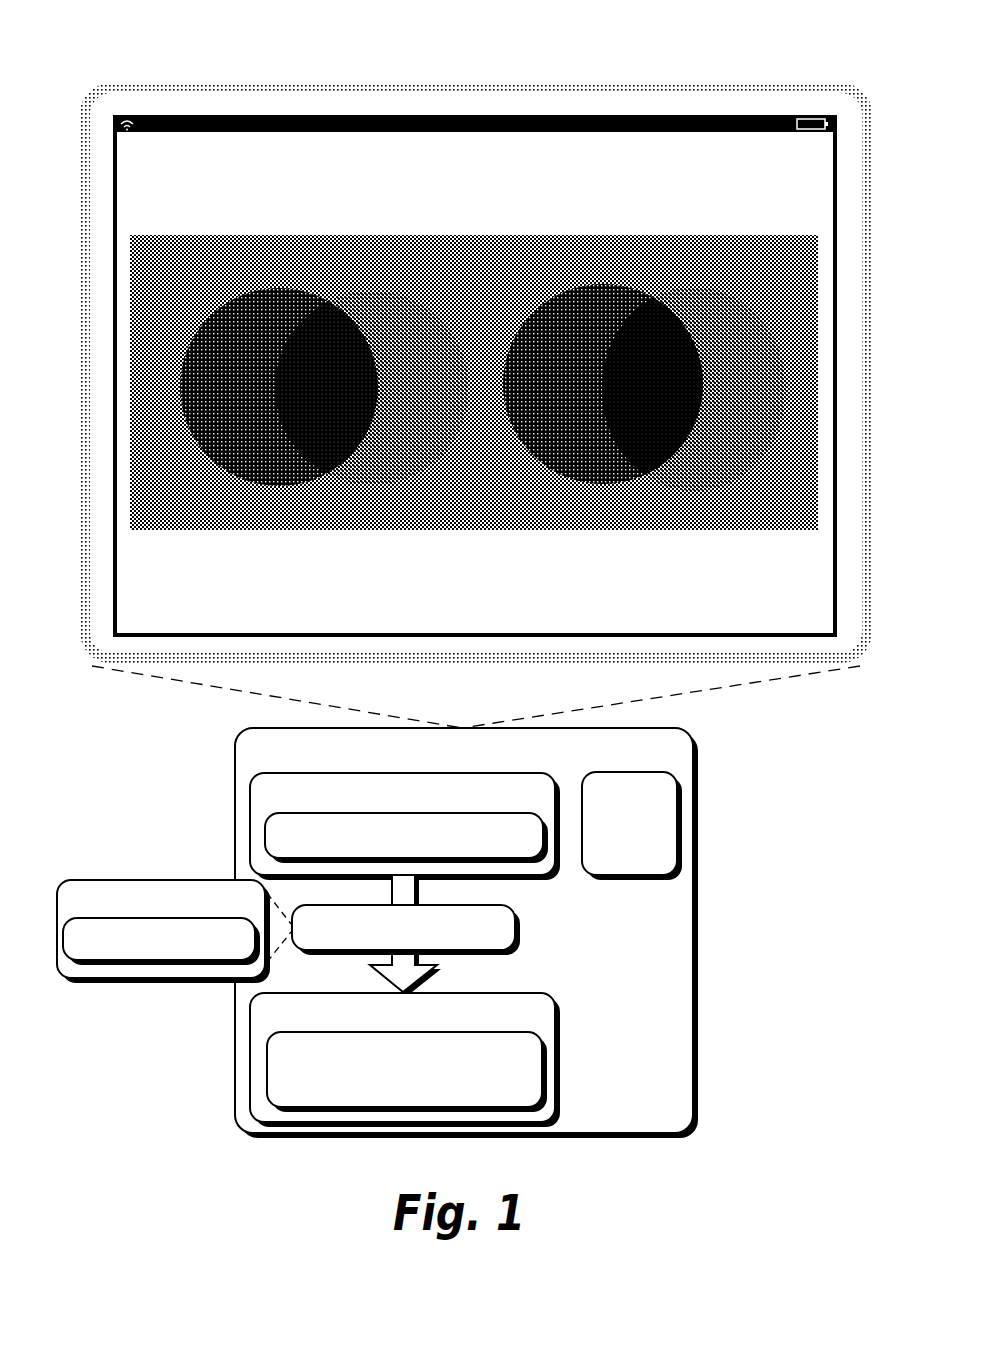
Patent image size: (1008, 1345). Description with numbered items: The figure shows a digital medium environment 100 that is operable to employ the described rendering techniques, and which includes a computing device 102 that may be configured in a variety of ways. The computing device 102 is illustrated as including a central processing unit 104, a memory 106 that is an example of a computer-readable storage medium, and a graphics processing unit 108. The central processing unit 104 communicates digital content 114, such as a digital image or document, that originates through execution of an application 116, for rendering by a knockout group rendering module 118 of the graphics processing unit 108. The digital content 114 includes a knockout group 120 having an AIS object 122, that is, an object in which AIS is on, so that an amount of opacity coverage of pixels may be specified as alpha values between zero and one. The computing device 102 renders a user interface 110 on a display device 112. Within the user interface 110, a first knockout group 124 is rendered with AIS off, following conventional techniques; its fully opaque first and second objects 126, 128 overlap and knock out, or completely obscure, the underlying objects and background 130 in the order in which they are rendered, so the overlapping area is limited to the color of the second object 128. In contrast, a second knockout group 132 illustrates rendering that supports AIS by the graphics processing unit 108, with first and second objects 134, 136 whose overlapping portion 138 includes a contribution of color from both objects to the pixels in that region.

The digital medium environment 100 is at (185, 77).
The computing device 102 is at (466, 933).
The central processing unit 104 is at (405, 826).
The memory 106 is at (632, 826).
The graphics processing unit 108 is at (405, 1060).
The user interface 110 is at (475, 376).
The display device 112 is at (515, 115).
The digital content 114 is at (406, 930).
The application 116 is at (406, 838).
The knockout group rendering module 118 is at (407, 1072).
The knockout group 120 is at (174, 931).
The AIS object 122 is at (161, 941).
The first knockout group 124 is at (264, 186).
The first object 126 is at (245, 292).
The second object 128 is at (362, 293).
The background 130 is at (443, 238).
The second knockout group 132 is at (635, 189).
The first object 134 is at (555, 295).
The second object 136 is at (683, 290).
The overlapping portion 138 is at (637, 302).